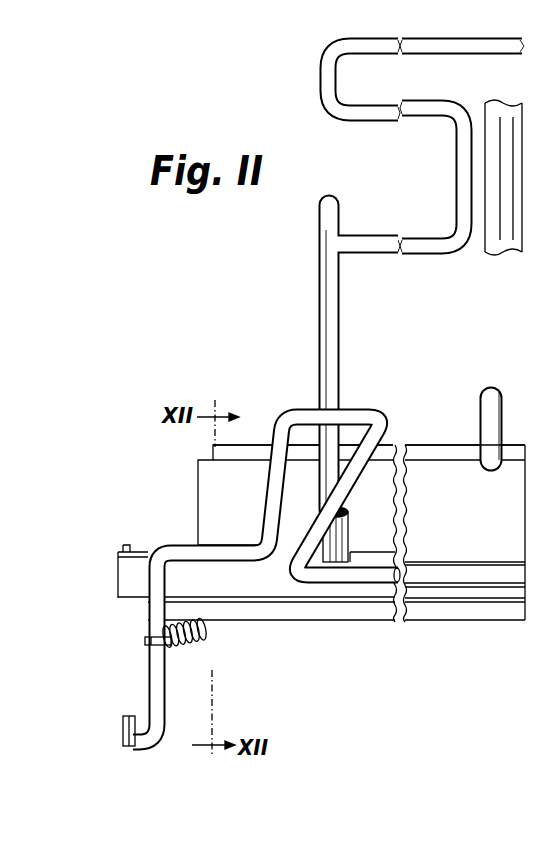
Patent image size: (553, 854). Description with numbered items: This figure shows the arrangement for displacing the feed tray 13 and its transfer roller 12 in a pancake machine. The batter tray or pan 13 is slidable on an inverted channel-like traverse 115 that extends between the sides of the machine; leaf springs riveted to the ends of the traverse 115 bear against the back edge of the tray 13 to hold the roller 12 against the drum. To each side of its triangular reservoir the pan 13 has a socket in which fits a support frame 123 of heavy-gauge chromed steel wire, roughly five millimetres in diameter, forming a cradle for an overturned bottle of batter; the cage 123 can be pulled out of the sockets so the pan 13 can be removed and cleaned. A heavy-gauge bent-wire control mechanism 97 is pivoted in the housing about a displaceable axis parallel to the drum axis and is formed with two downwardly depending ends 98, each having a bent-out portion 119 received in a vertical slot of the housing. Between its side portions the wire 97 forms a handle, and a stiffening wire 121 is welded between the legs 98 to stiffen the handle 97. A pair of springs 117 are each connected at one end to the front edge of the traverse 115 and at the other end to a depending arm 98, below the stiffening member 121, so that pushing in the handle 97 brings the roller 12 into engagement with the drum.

The transfer roller 12 is at (427, 452).
The feed tray 13 is at (462, 463).
The bent-wire control mechanism 97 is at (435, 573).
The depending arm 98 is at (150, 678).
The traverse 115 is at (286, 597).
The spring 117 is at (195, 638).
The bent-out portion 119 is at (172, 722).
The stiffening wire 121 is at (390, 610).
The support frame 123 is at (423, 120).